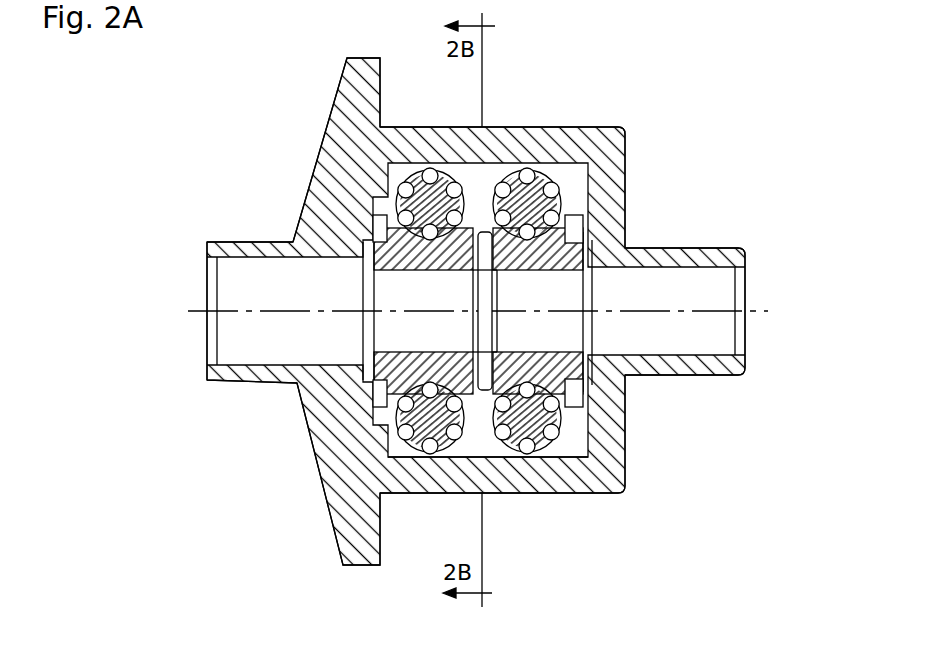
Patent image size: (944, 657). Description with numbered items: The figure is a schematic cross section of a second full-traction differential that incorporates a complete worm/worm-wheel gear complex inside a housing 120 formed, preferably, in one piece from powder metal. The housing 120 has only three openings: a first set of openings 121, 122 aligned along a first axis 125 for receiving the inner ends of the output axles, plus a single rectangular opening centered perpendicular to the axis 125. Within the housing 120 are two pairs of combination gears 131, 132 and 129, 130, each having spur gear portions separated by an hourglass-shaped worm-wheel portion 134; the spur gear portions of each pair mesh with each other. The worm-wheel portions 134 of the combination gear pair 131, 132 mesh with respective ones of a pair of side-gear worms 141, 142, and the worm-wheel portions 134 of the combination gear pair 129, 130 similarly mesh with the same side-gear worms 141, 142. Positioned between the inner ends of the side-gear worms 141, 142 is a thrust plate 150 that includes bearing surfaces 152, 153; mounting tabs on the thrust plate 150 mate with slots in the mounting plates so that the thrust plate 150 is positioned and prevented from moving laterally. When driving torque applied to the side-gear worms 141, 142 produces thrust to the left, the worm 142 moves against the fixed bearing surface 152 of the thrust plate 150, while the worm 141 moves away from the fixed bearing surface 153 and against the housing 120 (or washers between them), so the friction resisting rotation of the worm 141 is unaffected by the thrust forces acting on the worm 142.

The housing 120 is at (325, 167).
The opening 121 is at (236, 265).
The opening 122 is at (747, 288).
The first axis 125 is at (752, 318).
The combination gear 129 is at (390, 442).
The combination gear 130 is at (500, 445).
The combination gear 131 is at (398, 178).
The combination gear 132 is at (514, 127).
The worm-wheel portion 134 is at (418, 186).
The side-gear worm 141 is at (380, 290).
The side-gear worm 142 is at (585, 278).
The thrust plate 150 is at (488, 304).
The bearing surface 152 is at (497, 350).
The bearing surface 153 is at (467, 252).